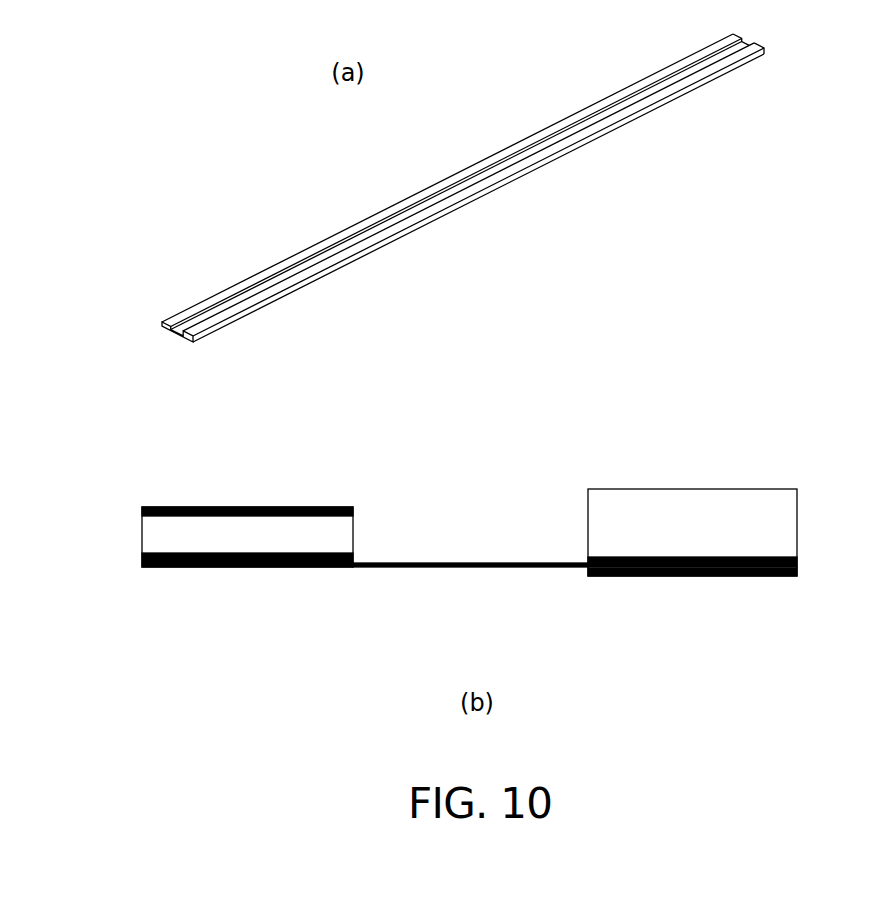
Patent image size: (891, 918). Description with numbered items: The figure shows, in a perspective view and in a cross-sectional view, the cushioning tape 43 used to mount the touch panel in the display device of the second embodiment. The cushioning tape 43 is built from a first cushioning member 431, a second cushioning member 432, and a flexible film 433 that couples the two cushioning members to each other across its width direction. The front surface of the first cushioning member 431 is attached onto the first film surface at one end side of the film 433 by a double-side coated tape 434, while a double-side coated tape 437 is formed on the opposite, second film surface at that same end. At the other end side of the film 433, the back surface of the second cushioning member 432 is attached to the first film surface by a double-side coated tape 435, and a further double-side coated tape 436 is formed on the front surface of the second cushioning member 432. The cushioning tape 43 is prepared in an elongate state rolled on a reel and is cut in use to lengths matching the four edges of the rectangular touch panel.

The cushioning tape 43 is at (528, 102).
The first cushioning member 431 is at (714, 516).
The second cushioning member 432 is at (163, 537).
The film 433 is at (384, 568).
The double-side coated tape 434 is at (768, 557).
The double-side coated tape 435 is at (158, 567).
The double-side coated tape 436 is at (163, 507).
The double-side coated tape 437 is at (770, 577).